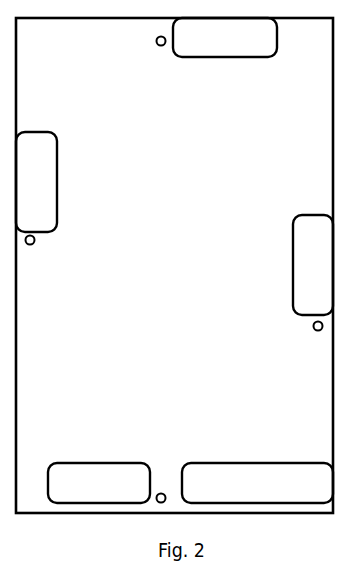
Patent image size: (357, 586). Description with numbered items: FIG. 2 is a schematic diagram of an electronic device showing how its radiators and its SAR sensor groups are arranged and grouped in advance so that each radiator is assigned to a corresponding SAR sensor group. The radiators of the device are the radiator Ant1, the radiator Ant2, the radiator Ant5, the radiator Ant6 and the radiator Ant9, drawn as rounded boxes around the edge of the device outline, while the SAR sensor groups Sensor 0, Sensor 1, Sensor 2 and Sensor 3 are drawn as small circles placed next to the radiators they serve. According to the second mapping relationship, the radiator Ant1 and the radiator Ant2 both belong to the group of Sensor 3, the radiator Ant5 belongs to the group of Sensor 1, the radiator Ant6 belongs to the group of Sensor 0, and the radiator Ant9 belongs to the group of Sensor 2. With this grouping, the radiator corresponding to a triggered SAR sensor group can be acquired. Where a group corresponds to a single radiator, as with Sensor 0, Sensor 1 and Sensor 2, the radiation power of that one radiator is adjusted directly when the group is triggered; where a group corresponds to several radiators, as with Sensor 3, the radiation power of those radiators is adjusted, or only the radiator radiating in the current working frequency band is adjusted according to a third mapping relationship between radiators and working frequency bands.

The radiator Ant1 is at (225, 37).
The radiator Ant2 is at (313, 265).
The radiator Ant5 is at (99, 483).
The radiator Ant6 is at (257, 483).
The radiator Ant9 is at (36, 182).
The SAR sensor group Sensor0 is at (291, 340).
The SAR sensor group Sensor1 is at (159, 464).
The SAR sensor group Sensor2 is at (71, 257).
The SAR sensor group Sensor3 is at (152, 63).